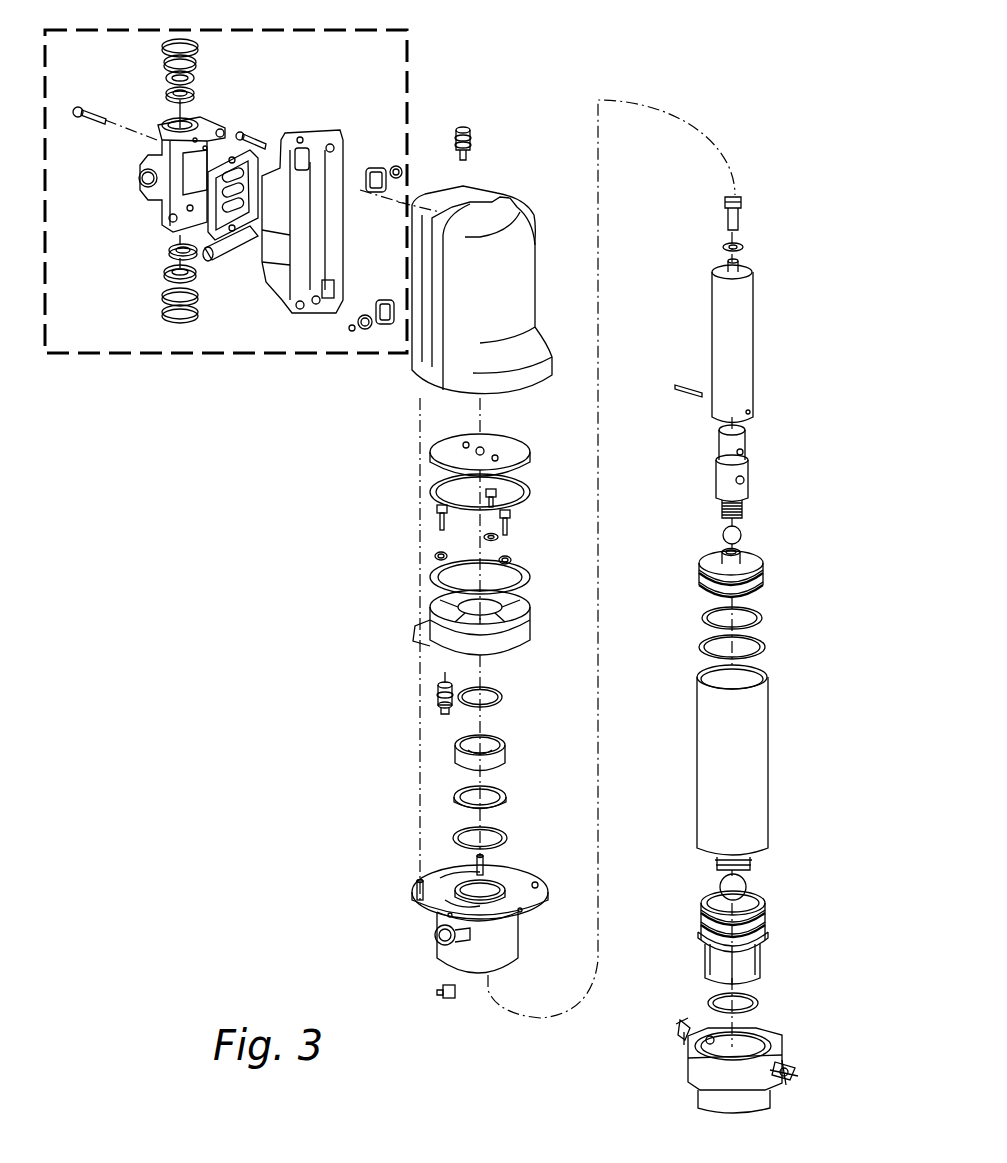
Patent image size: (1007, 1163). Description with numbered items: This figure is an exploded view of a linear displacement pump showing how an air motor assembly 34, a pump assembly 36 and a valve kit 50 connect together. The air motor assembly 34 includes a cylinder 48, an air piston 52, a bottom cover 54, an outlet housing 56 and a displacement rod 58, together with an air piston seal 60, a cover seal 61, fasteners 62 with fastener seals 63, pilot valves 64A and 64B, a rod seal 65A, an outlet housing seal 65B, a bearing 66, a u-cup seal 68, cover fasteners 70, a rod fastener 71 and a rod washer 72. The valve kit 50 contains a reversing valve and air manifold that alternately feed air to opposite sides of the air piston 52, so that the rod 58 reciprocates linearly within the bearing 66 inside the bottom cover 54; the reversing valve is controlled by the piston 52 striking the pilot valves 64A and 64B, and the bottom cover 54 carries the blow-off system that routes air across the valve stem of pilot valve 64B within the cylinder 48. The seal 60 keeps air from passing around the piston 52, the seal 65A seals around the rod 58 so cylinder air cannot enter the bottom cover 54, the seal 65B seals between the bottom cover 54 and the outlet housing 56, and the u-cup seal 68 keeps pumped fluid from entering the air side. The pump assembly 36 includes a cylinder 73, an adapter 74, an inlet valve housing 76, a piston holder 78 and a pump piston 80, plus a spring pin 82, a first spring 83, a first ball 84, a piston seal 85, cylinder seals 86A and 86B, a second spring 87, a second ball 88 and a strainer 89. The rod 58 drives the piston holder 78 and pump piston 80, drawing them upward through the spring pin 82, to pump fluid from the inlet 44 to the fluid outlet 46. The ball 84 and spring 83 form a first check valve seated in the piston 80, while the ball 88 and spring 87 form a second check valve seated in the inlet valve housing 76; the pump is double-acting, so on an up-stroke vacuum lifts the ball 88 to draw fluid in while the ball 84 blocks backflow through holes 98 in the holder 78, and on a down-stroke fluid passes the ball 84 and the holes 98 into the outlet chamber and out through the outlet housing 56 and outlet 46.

The air motor assembly 34 is at (514, 184).
The pump assembly 36 is at (775, 854).
The inlet 44 is at (710, 988).
The fluid outlet 46 is at (435, 925).
The cylinder 48 is at (505, 270).
The valve kit 50 is at (407, 58).
The air piston 52 is at (432, 453).
The bottom cover 54 is at (440, 637).
The outlet housing 56 is at (435, 982).
The displacement rod 58 is at (760, 330).
The air piston seal 60 is at (435, 490).
The cover seal 61 is at (440, 585).
The fasteners 62 is at (438, 512).
The fastener seals 63 is at (478, 538).
The pilot valve 64A is at (480, 136).
The pilot valve 64B is at (437, 690).
The rod seal 65A is at (505, 695).
The outlet housing seal 65B is at (505, 835).
The bearing 66 is at (505, 740).
The u-cup seal 68 is at (455, 796).
The cover fasteners 70 is at (414, 888).
The rod fastener 71 is at (740, 215).
The rod washer 72 is at (745, 247).
The cylinder 73 is at (752, 720).
The adapter 74 is at (695, 1063).
The inlet valve housing 76 is at (705, 960).
The piston holder 78 is at (750, 445).
The pump piston 80 is at (763, 565).
The spring pin 82 is at (688, 395).
The first spring 83 is at (748, 508).
The first ball 84 is at (745, 535).
The piston seal 85 is at (762, 617).
The cylinder seal 86A is at (767, 645).
The cylinder seal 86B is at (768, 918).
The second spring 87 is at (748, 875).
The second ball 88 is at (750, 890).
The strainer 89 is at (762, 1003).
The holes 98 is at (752, 478).